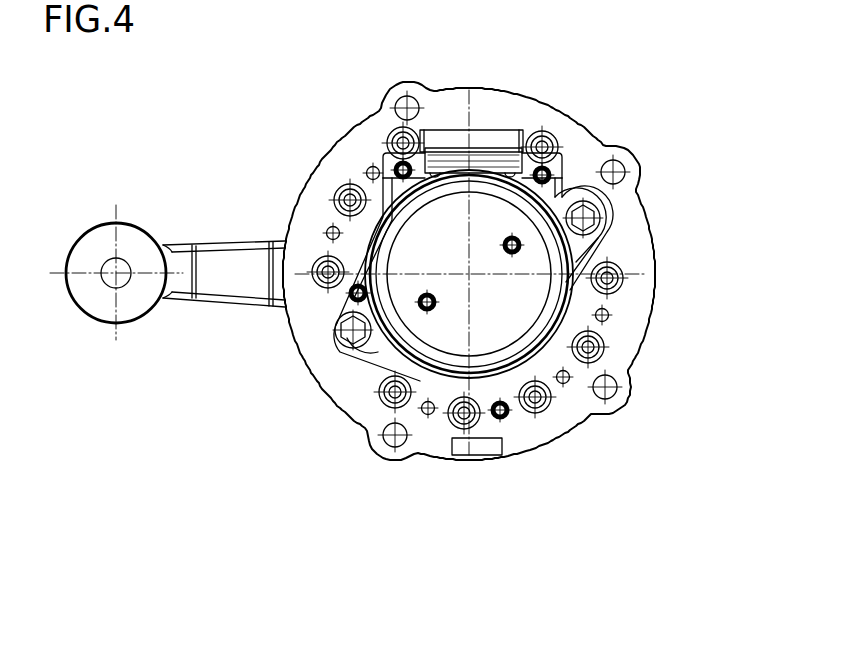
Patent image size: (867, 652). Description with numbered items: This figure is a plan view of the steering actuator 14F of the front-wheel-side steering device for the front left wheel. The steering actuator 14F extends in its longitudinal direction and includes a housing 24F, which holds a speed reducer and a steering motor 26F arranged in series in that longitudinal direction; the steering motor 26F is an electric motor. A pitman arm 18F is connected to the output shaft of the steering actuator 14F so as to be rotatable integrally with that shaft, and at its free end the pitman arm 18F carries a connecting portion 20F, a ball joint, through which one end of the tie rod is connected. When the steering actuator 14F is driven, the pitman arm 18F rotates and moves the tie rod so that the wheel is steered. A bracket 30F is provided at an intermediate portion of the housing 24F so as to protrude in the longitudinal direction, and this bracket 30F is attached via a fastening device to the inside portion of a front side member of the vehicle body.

The steering actuator 14F is at (546, 67).
The pitman arm 18F is at (232, 263).
The connecting portion 20F is at (100, 242).
The housing 24F is at (640, 316).
The steering motor 26F is at (503, 223).
The bracket 30F is at (477, 448).